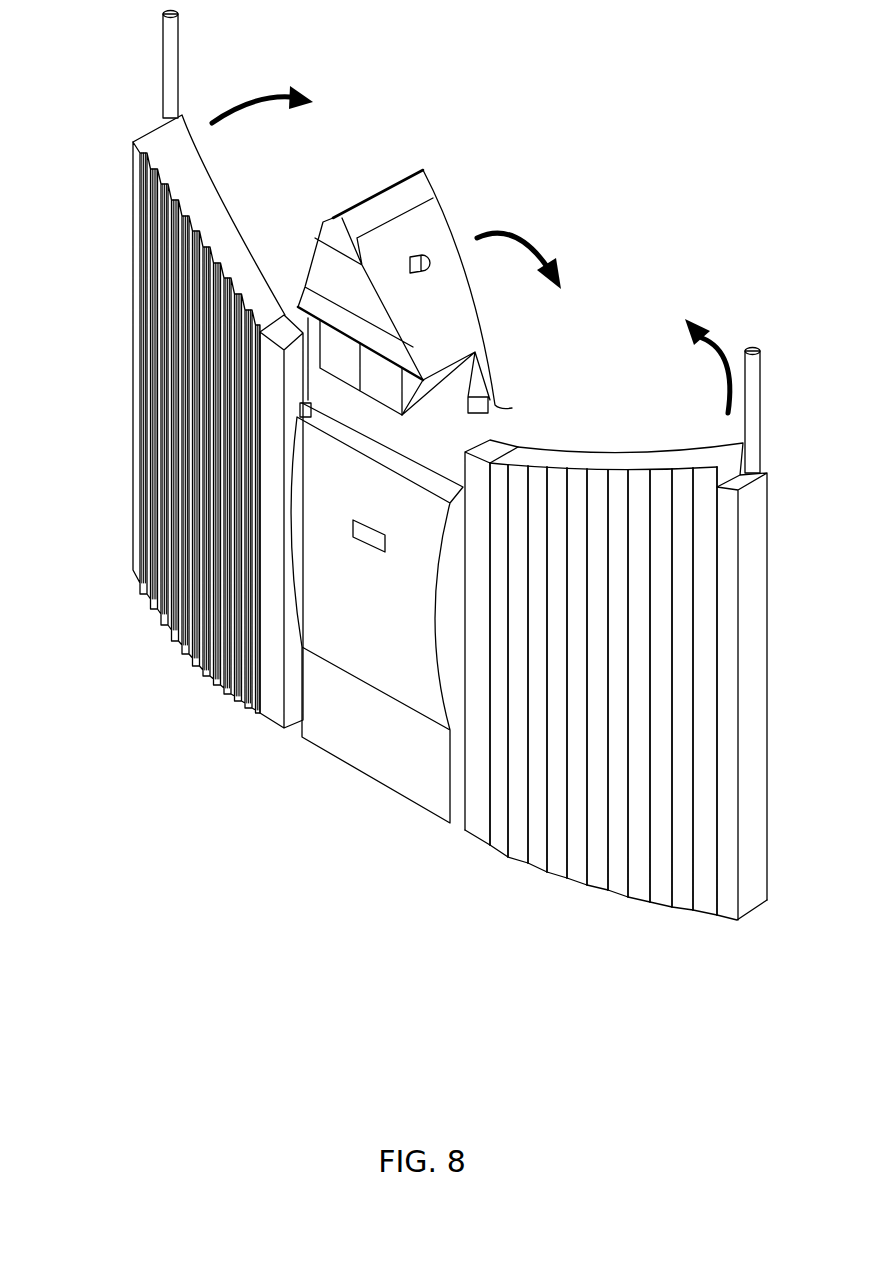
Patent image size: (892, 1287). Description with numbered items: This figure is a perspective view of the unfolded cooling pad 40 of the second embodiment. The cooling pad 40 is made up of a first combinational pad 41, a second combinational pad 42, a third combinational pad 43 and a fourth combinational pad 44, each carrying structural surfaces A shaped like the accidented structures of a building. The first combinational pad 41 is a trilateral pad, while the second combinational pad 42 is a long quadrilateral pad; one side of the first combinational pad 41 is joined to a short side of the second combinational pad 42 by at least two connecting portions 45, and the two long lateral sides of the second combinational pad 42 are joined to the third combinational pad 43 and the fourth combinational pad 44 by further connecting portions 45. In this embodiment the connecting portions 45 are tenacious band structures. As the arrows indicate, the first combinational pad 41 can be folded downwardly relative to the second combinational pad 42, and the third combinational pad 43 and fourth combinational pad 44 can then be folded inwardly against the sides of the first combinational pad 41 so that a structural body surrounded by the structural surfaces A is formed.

The cooling pad 40 is at (570, 190).
The first combinational pad 41 is at (452, 218).
The second combinational pad 42 is at (495, 430).
The third combinational pad 43 is at (698, 457).
The fourth combinational pad 44 is at (233, 222).
The connecting portion 45 is at (495, 408).
The structural surface A is at (330, 595).